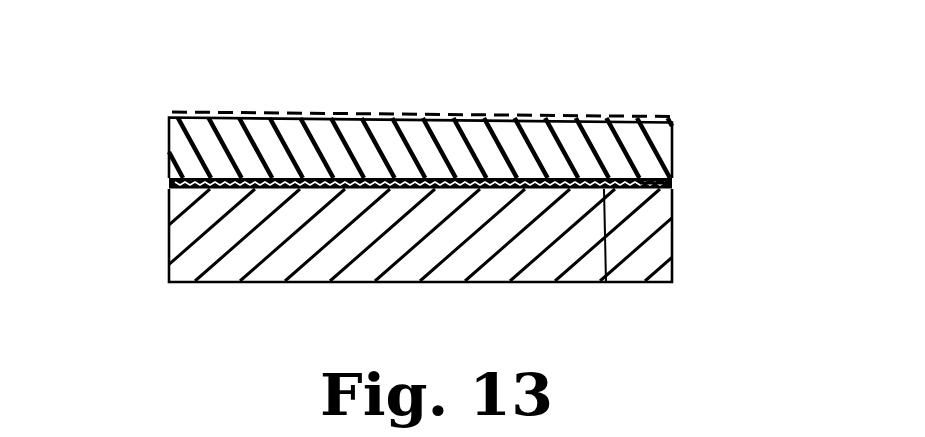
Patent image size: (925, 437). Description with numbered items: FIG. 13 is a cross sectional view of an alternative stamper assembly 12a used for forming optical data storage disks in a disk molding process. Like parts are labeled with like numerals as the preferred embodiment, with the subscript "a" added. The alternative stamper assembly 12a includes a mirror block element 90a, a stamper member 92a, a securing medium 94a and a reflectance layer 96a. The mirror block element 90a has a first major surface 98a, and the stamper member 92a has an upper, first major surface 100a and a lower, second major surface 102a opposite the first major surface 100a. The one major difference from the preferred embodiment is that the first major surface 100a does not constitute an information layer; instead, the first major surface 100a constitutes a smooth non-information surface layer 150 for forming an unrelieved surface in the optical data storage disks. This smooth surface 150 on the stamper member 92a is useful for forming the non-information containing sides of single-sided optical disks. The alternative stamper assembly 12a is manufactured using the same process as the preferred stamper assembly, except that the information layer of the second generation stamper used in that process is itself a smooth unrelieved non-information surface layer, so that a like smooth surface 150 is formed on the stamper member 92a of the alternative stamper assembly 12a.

The alternative stamper assembly 12a is at (758, 116).
The mirror block element 90a is at (648, 258).
The stamper member 92a is at (170, 144).
The securing medium 94a is at (672, 186).
The reflectance layer 96a is at (335, 112).
The first major surface of mirror block element 98a is at (200, 181).
The first major surface of stamper member 100a is at (692, 79).
The second major surface of stamper member 102a is at (606, 282).
The smooth non-information surface layer 150 is at (500, 110).